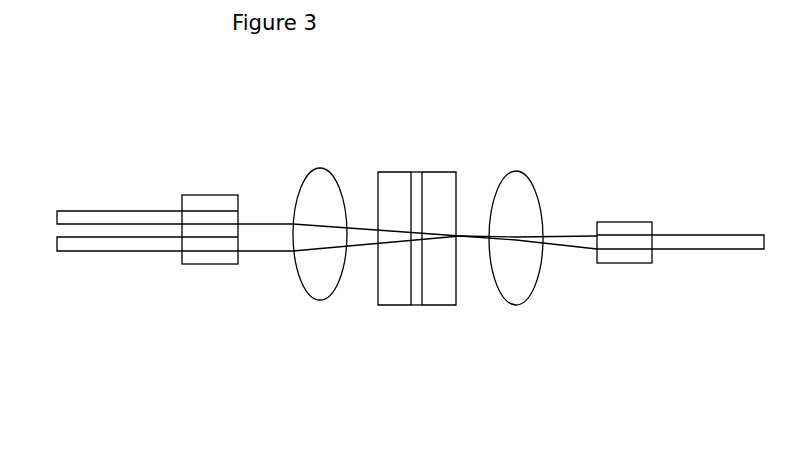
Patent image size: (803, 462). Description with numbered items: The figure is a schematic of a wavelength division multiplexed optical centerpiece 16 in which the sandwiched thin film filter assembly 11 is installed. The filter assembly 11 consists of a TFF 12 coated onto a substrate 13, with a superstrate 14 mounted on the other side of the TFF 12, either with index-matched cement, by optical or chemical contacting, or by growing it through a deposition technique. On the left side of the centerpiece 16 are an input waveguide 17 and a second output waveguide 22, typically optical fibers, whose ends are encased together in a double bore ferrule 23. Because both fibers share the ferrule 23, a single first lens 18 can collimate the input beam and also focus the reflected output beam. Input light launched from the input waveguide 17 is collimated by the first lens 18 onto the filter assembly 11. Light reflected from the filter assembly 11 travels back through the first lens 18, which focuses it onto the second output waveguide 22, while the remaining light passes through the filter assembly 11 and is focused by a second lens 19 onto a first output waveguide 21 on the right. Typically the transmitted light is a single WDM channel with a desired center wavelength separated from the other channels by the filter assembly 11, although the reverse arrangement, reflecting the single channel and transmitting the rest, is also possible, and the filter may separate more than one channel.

The thin film filter assembly 11 is at (413, 259).
The TFF 12 is at (417, 170).
The substrate 13 is at (393, 292).
The superstrate 14 is at (450, 292).
The optical centerpiece 16 is at (626, 208).
The input waveguide 17 is at (77, 216).
The first lens 18 is at (321, 182).
The second lens 19 is at (510, 173).
The first output waveguide 21 is at (708, 249).
The second output waveguide 22 is at (98, 253).
The double bore ferrule 23 is at (223, 195).